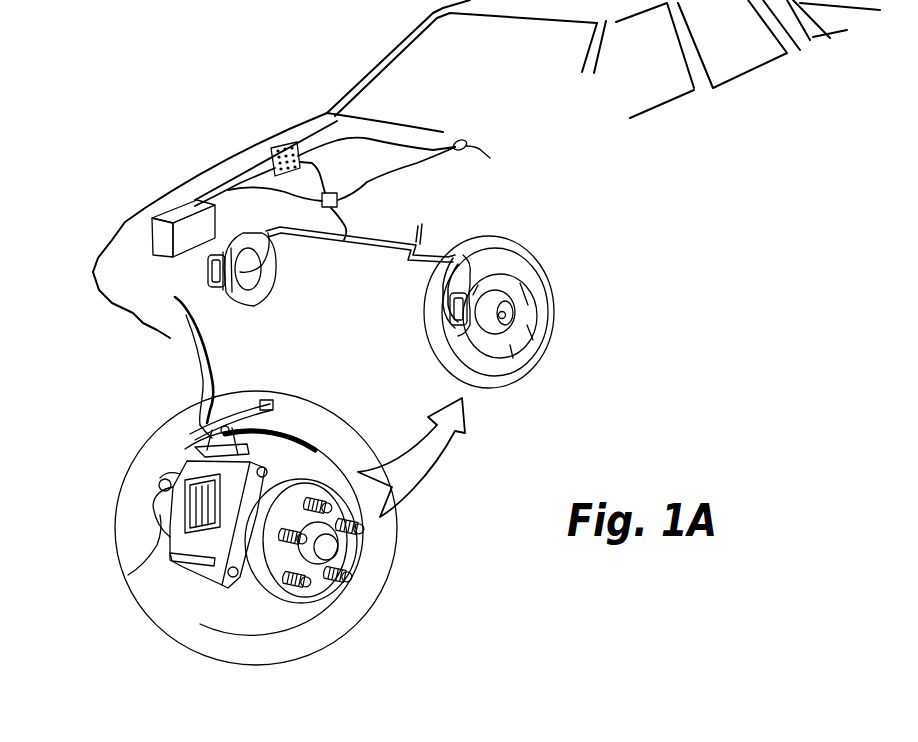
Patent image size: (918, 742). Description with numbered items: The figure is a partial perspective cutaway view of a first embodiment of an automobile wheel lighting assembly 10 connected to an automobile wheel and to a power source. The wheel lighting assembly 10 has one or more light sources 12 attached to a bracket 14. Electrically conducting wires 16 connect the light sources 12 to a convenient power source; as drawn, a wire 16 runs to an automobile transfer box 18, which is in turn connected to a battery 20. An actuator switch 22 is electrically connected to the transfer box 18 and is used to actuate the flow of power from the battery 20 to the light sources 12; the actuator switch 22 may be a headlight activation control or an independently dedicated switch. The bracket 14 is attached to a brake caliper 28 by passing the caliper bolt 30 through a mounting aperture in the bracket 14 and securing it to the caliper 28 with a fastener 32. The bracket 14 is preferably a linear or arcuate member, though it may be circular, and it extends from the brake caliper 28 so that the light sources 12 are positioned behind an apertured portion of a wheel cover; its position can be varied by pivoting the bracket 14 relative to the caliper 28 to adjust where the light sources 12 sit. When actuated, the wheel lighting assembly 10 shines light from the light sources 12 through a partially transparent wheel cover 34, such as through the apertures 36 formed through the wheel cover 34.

The wheel lighting assembly 10 is at (112, 441).
The light sources 12 is at (259, 402).
The bracket 14 is at (207, 433).
The electrically conducting wires 16 is at (256, 214).
The transfer box 18 is at (333, 193).
The battery 20 is at (170, 210).
The actuator switch 22 is at (470, 148).
The brake caliper 28 is at (128, 575).
The caliper bolt 30 is at (161, 517).
The fastener 32 is at (264, 472).
The wheel cover 34 is at (517, 345).
The apertures 36 is at (527, 325).